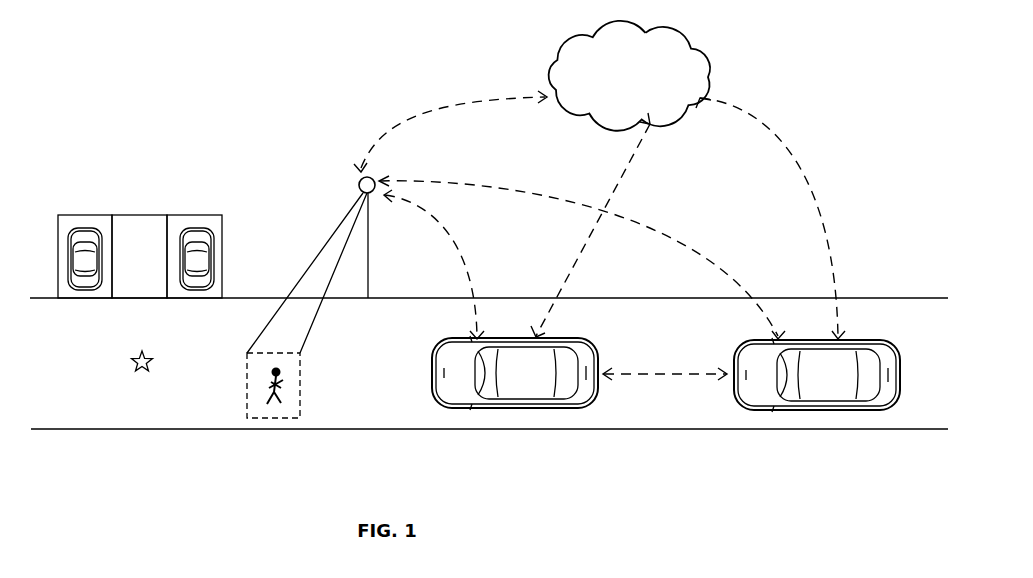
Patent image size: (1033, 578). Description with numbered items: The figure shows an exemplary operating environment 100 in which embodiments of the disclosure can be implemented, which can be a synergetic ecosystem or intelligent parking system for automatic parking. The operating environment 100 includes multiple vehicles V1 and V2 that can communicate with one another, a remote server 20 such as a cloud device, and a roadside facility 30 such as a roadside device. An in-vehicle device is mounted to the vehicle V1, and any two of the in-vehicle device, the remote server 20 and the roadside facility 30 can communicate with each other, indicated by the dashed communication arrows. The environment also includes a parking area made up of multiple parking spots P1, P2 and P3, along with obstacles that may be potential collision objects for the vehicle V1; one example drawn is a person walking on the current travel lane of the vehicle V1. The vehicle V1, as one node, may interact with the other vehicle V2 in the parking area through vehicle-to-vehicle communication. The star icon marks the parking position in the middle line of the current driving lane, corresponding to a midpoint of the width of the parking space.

The operating environment 100 is at (296, 39).
The remote server 20 is at (614, 88).
The roadside facility 30 is at (360, 178).
The parking spot P1 is at (80, 215).
The parking spot P2 is at (135, 215).
The parking spot P3 is at (188, 215).
The vehicle V1 is at (520, 407).
The other vehicle V2 is at (840, 410).